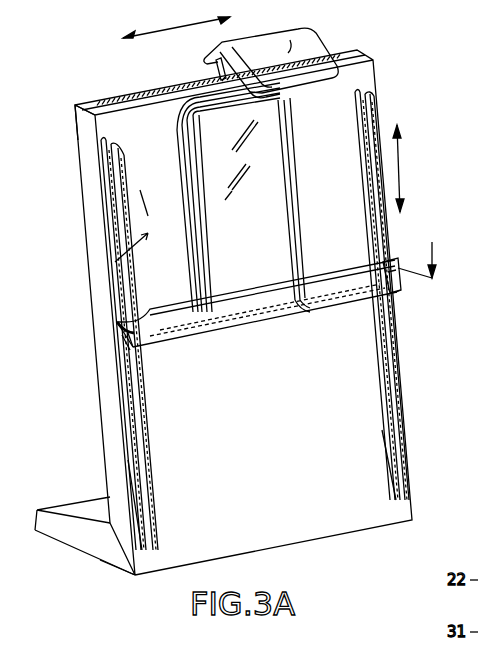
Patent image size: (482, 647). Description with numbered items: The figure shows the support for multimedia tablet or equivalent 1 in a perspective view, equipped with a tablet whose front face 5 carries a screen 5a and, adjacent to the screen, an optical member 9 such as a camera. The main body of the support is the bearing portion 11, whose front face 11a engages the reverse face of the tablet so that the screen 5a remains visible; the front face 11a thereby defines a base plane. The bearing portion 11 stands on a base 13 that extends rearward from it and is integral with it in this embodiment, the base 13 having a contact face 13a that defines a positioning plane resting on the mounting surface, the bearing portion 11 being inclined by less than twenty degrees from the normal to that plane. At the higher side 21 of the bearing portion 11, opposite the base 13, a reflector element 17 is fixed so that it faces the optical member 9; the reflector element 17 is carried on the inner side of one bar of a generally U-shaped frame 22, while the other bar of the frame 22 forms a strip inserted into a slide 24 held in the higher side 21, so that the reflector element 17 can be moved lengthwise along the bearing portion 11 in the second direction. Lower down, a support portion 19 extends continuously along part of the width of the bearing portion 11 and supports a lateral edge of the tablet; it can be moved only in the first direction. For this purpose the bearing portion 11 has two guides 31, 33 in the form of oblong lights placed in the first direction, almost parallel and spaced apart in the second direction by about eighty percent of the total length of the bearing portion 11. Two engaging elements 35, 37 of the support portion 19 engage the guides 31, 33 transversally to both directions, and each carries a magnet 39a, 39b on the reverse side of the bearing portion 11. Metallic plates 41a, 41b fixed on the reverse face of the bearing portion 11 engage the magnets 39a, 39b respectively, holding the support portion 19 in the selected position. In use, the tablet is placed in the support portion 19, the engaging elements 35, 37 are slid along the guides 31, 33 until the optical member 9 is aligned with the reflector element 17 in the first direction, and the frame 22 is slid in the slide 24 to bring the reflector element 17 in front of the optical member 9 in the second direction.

The support for multimedia tablet or equivalent 1 is at (438, 121).
The front face 5 is at (180, 165).
The screen 5a is at (284, 192).
The optical member 9 is at (243, 75).
The bearing portion 11 is at (116, 265).
The front face 11a is at (140, 206).
The base 13 is at (77, 549).
The contact face 13a is at (113, 576).
The reflector element 17 is at (290, 40).
The support portion 19 is at (248, 325).
The higher side 21 is at (85, 104).
The frame 22 is at (214, 70).
The slide 24 is at (133, 92).
The guide 31 is at (100, 162).
The guide 33 is at (378, 106).
The engaging element 35 is at (124, 331).
The engaging element 37 is at (401, 270).
The magnet 39a is at (135, 343).
The magnet 39b is at (400, 292).
The metallic plate 41a is at (150, 496).
The metallic plate 41b is at (387, 468).